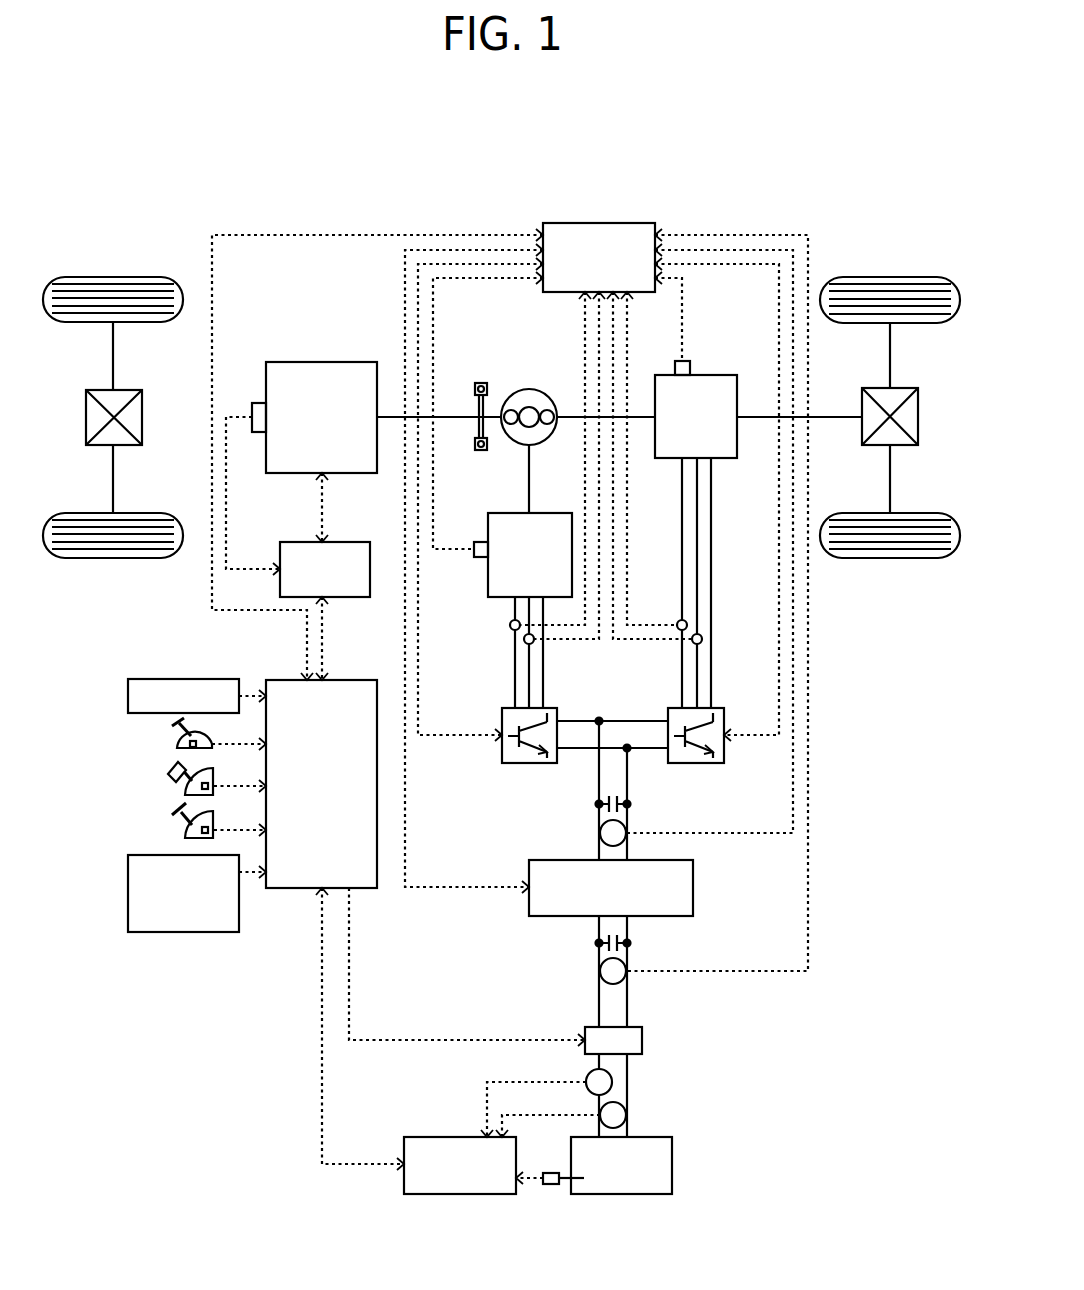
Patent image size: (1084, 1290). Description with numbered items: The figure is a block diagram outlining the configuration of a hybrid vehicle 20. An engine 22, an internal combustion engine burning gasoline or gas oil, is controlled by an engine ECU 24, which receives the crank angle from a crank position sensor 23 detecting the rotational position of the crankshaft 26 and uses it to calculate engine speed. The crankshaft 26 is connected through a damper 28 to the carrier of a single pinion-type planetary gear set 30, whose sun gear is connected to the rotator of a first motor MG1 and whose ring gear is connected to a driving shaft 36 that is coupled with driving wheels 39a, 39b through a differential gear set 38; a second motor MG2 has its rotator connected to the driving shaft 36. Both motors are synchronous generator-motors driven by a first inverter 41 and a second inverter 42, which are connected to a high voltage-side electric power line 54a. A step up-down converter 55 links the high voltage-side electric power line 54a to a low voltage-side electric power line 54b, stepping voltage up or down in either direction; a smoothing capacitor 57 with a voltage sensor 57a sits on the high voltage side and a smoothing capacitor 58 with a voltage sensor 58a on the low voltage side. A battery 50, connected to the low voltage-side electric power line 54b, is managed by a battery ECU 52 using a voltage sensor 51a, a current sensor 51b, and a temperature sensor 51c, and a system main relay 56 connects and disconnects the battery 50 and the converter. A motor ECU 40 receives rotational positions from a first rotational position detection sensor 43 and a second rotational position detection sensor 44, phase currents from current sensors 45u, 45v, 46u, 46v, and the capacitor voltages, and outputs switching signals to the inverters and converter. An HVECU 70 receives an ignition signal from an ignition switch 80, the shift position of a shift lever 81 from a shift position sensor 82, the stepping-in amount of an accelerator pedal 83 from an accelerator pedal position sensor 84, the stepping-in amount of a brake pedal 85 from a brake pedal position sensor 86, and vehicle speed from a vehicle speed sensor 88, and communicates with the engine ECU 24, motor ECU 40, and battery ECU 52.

The hybrid vehicle 20 is at (739, 181).
The engine 22 is at (320, 361).
The crank position sensor 23 is at (258, 402).
The engine ECU 24 is at (345, 541).
The crankshaft 26 is at (453, 416).
The damper 28 is at (482, 382).
The planetary gear set 30 is at (529, 389).
The first motor MG1 is at (503, 512).
The second motor MG2 is at (729, 374).
The driving shaft 36 is at (827, 416).
The differential gear set 38 is at (903, 387).
The driving wheel 39a is at (890, 276).
The driving wheel 39b is at (890, 559).
The motor ECU 40 is at (598, 222).
The first inverter 41 is at (553, 707).
The second inverter 42 is at (720, 707).
The first rotational position detection sensor 43 is at (476, 560).
The second rotational position detection sensor 44 is at (686, 360).
The current sensor 45u is at (510, 625).
The current sensor 45v is at (524, 639).
The current sensor 46u is at (687, 625).
The current sensor 46v is at (702, 639).
The battery 50 is at (674, 1165).
The voltage sensor 51a is at (627, 1115).
The current sensor 51b is at (613, 1082).
The temperature sensor 51c is at (551, 1185).
The battery ECU 52 is at (462, 1136).
The high voltage-side electric power line 54a is at (627, 780).
The low voltage-side electric power line 54b is at (627, 995).
The step up-down converter 55 is at (696, 887).
The system main relay 56 is at (644, 1040).
The smoothing capacitor 57 is at (632, 804).
The voltage sensor 57a is at (600, 833).
The smoothing capacitor 58 is at (632, 943).
The voltage sensor 58a is at (600, 971).
The HVECU 70 is at (346, 679).
The ignition switch 80 is at (127, 696).
The shift lever 81 is at (172, 733).
The shift position sensor 82 is at (177, 745).
The accelerator pedal 83 is at (168, 771).
The accelerator pedal position sensor 84 is at (188, 787).
The brake pedal 85 is at (172, 815).
The brake pedal position sensor 86 is at (188, 832).
The vehicle speed sensor 88 is at (127, 872).